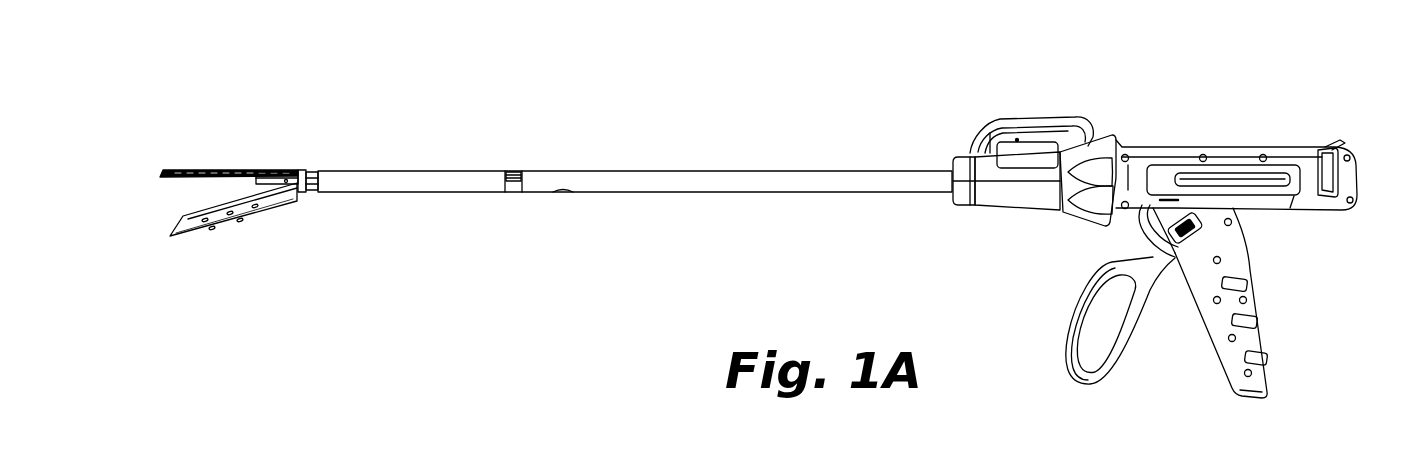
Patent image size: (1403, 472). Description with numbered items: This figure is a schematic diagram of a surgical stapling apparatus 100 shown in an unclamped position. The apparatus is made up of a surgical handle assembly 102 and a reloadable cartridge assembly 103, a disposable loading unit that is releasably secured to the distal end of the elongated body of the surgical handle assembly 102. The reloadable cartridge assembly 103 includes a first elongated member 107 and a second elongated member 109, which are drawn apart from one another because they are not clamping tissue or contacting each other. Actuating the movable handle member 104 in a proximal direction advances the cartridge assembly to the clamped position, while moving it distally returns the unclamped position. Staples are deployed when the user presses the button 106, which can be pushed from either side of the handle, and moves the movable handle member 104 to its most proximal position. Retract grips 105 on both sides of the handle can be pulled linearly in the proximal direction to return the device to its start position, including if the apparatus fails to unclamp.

The surgical stapling apparatus 100 is at (203, 83).
The surgical handle assembly 102 is at (1193, 150).
The reloadable cartridge assembly 103 is at (390, 175).
The movable handle member 104 is at (1078, 323).
The retract grips 105 is at (1317, 150).
The button 106 is at (1153, 204).
The first elongated member 107 is at (228, 213).
The second elongated member 109 is at (224, 171).